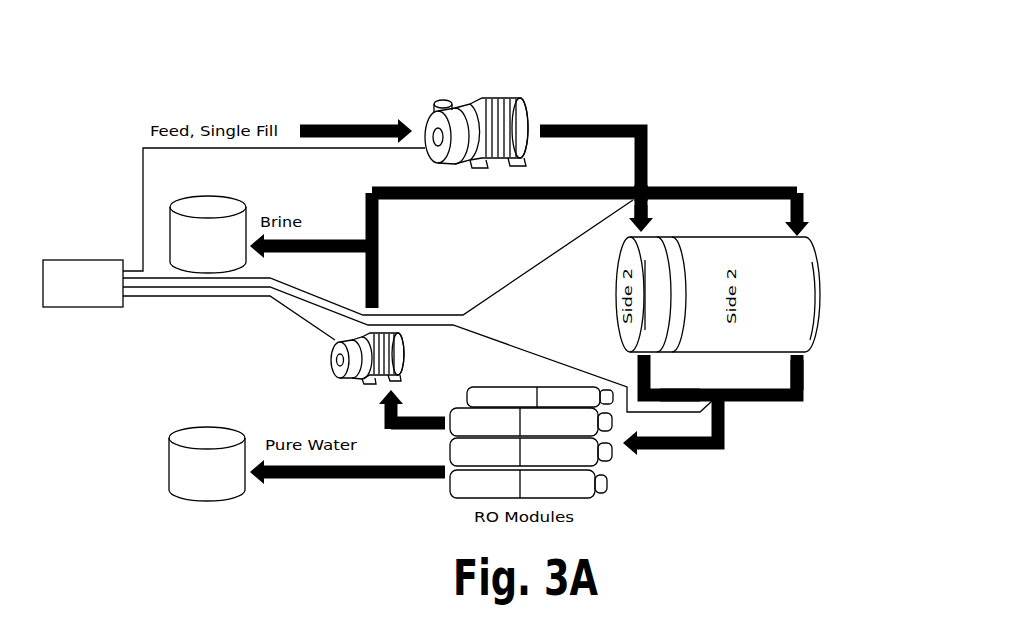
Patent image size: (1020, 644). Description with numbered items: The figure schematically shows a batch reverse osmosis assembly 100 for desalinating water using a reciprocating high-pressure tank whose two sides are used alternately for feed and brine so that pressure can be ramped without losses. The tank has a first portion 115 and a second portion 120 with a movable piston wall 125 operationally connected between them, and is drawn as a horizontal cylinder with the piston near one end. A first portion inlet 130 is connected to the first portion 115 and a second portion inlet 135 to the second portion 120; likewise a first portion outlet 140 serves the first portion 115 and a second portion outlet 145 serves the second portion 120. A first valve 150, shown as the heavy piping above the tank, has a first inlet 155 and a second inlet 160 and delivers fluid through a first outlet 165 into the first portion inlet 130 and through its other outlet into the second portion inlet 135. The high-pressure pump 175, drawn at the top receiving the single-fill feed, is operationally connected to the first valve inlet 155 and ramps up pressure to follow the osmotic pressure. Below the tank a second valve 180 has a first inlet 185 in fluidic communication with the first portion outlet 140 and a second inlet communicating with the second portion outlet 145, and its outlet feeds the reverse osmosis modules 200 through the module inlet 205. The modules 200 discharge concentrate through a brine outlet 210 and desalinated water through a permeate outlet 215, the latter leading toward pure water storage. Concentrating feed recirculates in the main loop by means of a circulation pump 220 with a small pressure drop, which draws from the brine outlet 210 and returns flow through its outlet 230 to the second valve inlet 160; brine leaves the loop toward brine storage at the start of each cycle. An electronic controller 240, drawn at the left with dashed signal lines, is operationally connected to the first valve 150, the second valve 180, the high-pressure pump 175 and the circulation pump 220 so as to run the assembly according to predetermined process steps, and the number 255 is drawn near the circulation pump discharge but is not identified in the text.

The assembly 100 is at (866, 100).
The first portion 115 is at (620, 341).
The second portion 120 is at (805, 338).
The movable piston wall 125 is at (717, 283).
The first portion inlet 130 is at (623, 222).
The second portion inlet 135 is at (812, 216).
The first portion outlet 140 is at (626, 362).
The second portion outlet 145 is at (810, 364).
The valve 150 is at (654, 182).
The first inlet 155 is at (629, 183).
The second inlet 160 is at (616, 208).
The first outlet 165 is at (669, 269).
The high-pressure pump 175 is at (503, 105).
The valve 180 is at (780, 448).
The first inlet 185 is at (685, 378).
The reverse osmosis module 200 is at (612, 490).
The inlet 205 is at (670, 425).
The brine outlet 210 is at (418, 410).
The permeate outlet 215 is at (347, 481).
The circulation pump 220 is at (280, 358).
The outlet 230 is at (331, 250).
The electronic controller 240 is at (377, 280).
The circulation pump outlet 255 is at (376, 394).